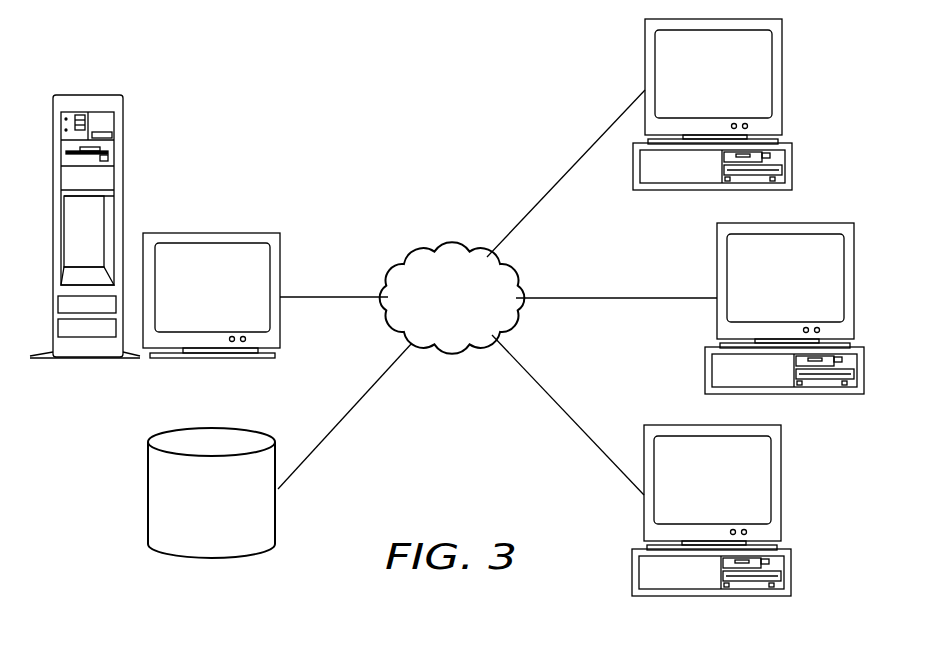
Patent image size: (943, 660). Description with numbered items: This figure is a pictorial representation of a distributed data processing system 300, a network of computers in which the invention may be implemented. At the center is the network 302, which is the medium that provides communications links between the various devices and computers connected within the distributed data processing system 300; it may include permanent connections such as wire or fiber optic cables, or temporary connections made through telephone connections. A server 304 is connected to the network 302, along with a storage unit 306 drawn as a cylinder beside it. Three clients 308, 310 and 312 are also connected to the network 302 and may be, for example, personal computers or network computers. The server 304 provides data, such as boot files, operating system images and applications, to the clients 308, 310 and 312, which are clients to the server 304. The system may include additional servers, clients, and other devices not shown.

The distributed data processing system 300 is at (320, 90).
The network 302 is at (433, 310).
The server 304 is at (193, 302).
The storage unit 306 is at (194, 518).
The client 308 is at (694, 88).
The client 310 is at (768, 291).
The client 312 is at (694, 493).